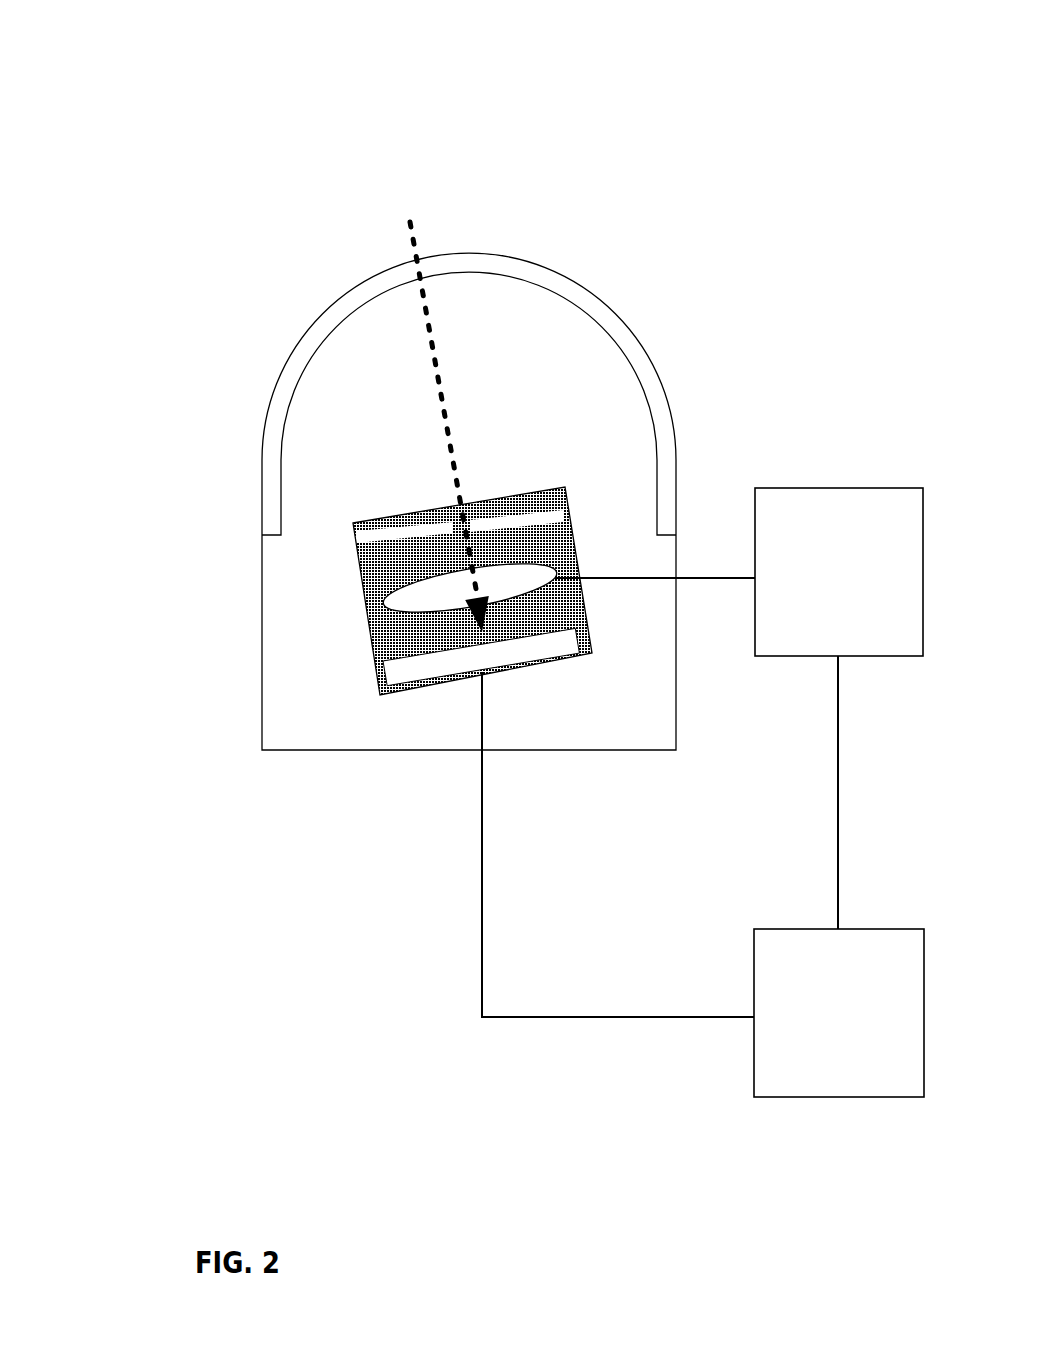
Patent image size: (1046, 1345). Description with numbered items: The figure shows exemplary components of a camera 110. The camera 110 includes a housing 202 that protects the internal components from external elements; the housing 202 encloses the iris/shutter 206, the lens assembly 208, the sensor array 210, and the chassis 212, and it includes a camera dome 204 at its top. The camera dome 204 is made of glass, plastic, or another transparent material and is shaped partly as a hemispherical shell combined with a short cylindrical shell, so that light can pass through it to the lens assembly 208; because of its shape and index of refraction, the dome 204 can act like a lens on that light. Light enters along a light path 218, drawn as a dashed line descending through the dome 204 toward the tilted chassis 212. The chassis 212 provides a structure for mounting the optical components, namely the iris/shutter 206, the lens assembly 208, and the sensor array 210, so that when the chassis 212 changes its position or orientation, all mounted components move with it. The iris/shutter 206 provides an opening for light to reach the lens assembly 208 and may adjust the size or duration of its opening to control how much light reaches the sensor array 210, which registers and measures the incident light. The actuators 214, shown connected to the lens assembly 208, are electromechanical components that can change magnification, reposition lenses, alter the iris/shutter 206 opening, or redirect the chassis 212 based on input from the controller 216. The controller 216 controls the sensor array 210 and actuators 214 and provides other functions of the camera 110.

The camera 110 is at (443, 98).
The housing 202 is at (651, 767).
The camera dome 204 is at (548, 283).
The iris/shutter 206 is at (508, 517).
The lens assembly 208 is at (540, 572).
The sensor array 210 is at (567, 638).
The chassis 212 is at (515, 673).
The actuators 214 is at (820, 601).
The controller 216 is at (820, 1041).
The light path 218 is at (400, 243).